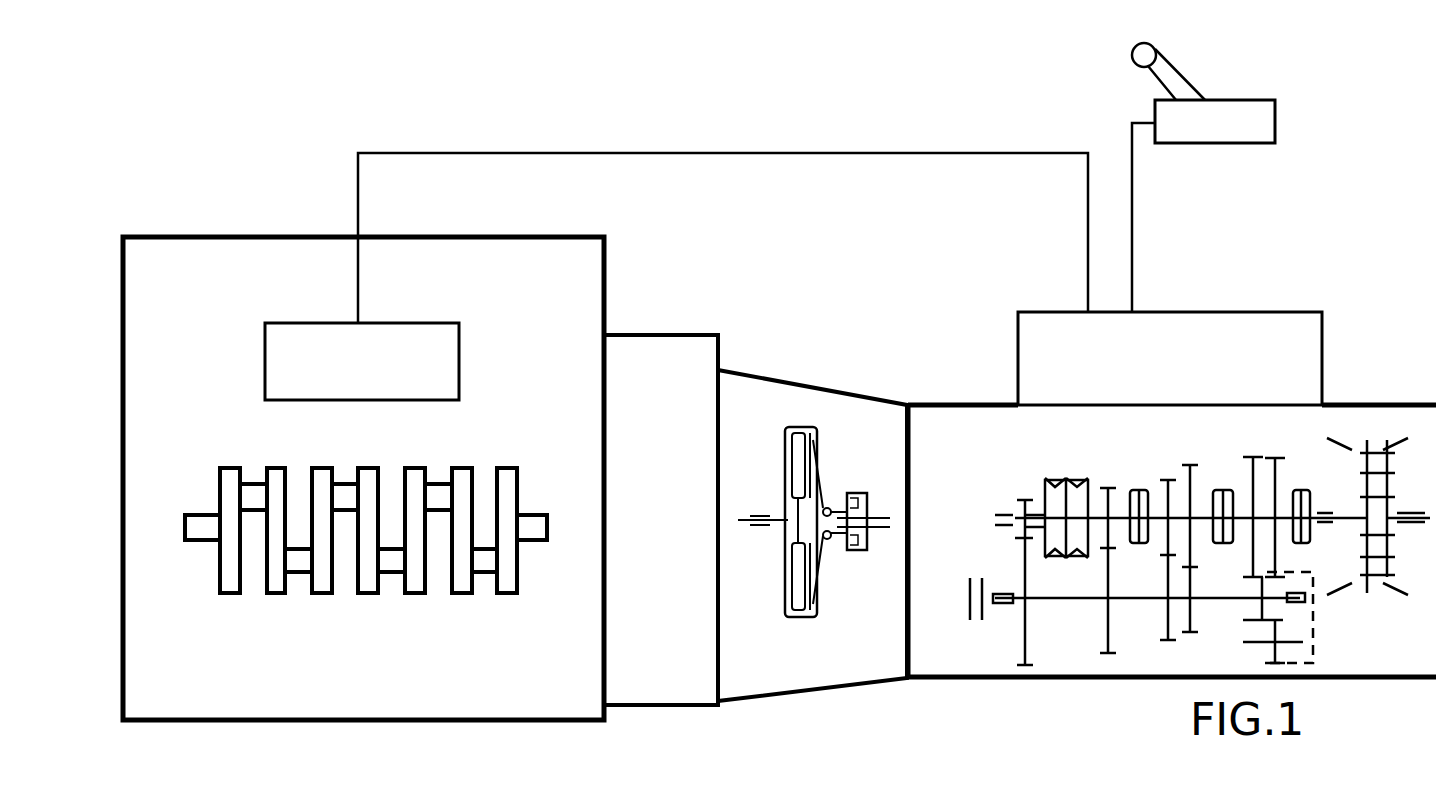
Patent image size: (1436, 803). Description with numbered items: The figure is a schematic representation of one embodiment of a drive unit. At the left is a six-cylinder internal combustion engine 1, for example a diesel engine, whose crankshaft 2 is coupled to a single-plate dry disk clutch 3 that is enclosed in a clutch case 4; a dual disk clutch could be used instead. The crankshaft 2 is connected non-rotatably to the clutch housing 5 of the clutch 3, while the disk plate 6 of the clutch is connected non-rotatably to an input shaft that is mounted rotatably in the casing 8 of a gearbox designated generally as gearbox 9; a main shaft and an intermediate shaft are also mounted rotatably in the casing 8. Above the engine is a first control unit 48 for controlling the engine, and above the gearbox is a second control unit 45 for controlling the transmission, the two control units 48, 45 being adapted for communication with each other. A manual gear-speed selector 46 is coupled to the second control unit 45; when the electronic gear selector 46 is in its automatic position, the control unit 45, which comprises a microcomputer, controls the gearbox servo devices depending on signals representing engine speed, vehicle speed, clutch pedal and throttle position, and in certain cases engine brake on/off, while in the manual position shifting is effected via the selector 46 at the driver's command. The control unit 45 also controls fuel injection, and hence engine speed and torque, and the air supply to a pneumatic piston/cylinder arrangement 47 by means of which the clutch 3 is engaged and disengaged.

The internal combustion engine 1 is at (181, 213).
The crankshaft 2 is at (277, 592).
The disk clutch 3 is at (812, 481).
The clutch case 4 is at (740, 370).
The clutch housing 5 is at (785, 455).
The disk plate 6 is at (792, 583).
The casing 8 is at (973, 682).
The gearbox 9 is at (1366, 398).
The second control unit 45 is at (1200, 310).
The manual gear-speed selector 46 is at (1229, 139).
The pneumatic piston/cylinder arrangement 47 is at (846, 502).
The first control unit 48 is at (369, 386).